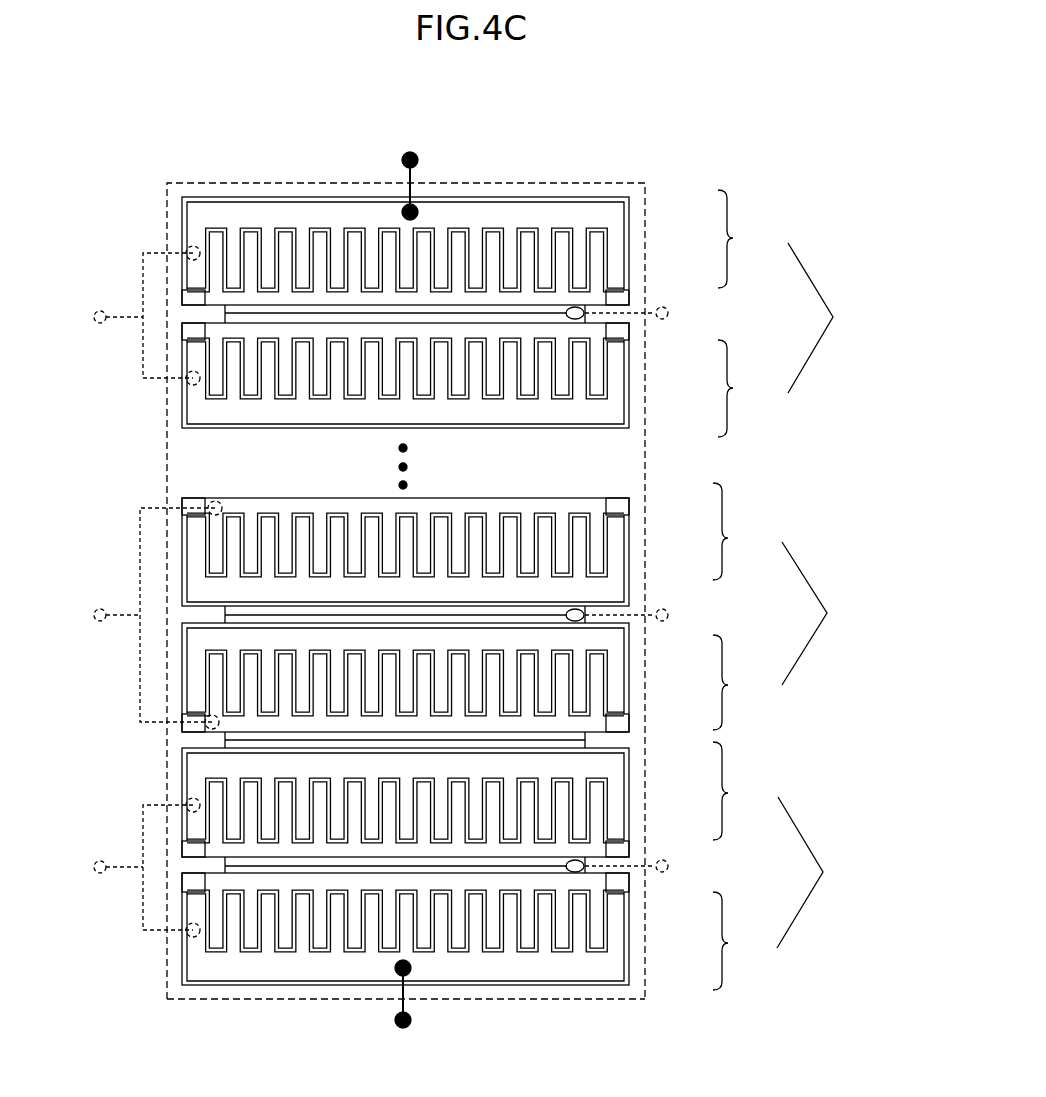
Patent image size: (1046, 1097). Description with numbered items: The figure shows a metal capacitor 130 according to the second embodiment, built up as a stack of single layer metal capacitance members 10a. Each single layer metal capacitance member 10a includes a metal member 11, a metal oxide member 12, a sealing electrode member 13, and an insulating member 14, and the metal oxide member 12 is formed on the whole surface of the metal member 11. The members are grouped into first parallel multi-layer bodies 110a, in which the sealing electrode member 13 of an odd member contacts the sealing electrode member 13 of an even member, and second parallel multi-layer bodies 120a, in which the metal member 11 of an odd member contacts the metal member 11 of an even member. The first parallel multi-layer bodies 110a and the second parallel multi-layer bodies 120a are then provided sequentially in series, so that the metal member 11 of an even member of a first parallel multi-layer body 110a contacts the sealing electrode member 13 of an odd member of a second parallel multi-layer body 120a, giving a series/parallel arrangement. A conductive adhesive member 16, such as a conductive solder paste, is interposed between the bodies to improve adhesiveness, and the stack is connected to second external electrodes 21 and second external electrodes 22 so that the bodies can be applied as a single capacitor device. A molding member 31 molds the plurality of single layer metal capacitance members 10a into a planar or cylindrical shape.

The single layer metal capacitance member 10a is at (747, 590).
The metal member 11 is at (615, 212).
The metal oxide member 12 is at (630, 240).
The sealing electrode member 13 is at (592, 292).
The insulating member 14 is at (620, 297).
The conductive adhesive member 16 is at (232, 313).
The second external electrode 21 is at (418, 155).
The second external electrode 22 is at (85, 904).
The molding member 31 is at (555, 1000).
The first parallel multi-layer body 110a is at (836, 595).
The second parallel multi-layer body 120a is at (835, 613).
The metal capacitor 130 is at (337, 180).